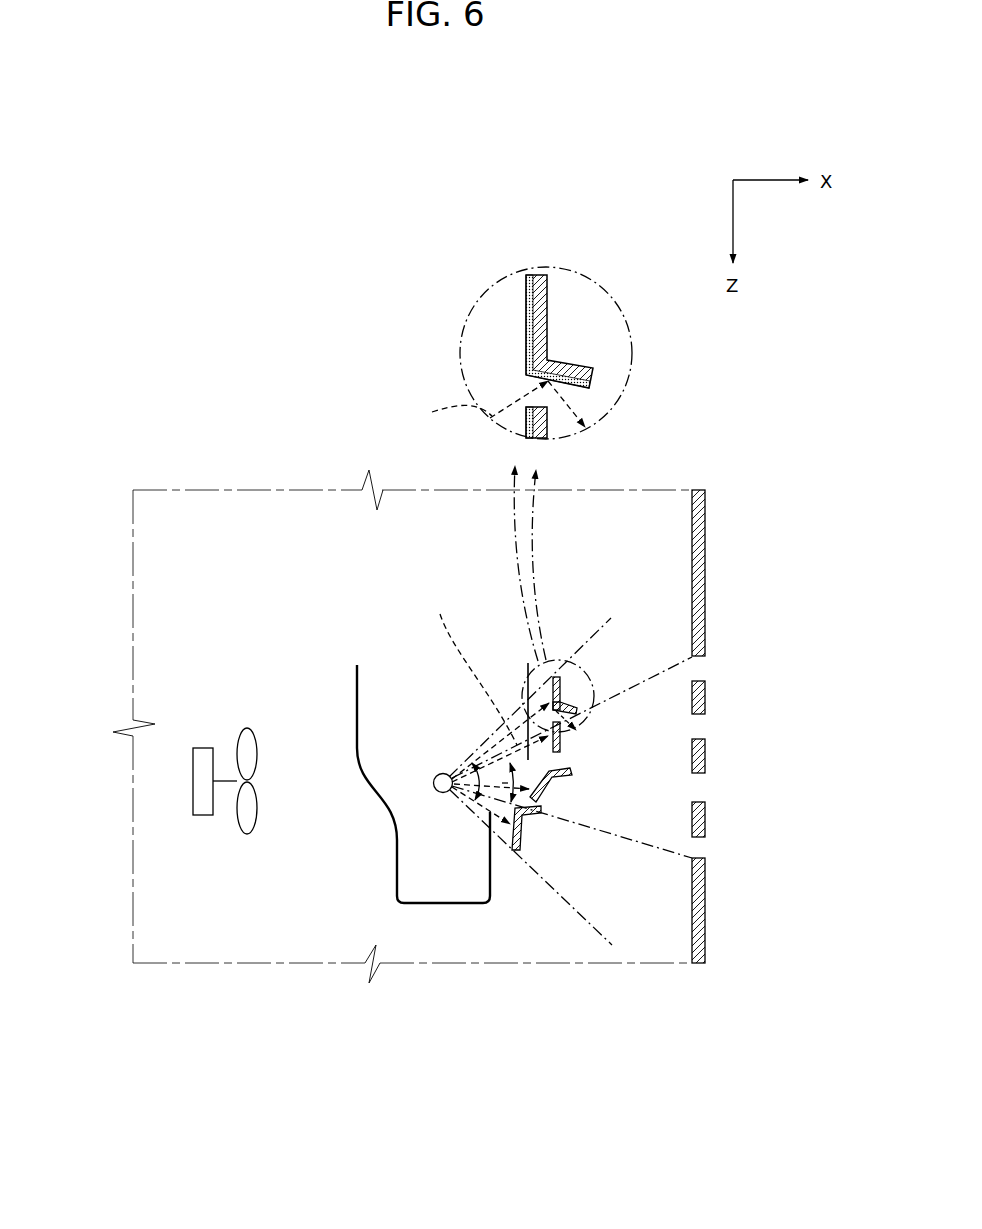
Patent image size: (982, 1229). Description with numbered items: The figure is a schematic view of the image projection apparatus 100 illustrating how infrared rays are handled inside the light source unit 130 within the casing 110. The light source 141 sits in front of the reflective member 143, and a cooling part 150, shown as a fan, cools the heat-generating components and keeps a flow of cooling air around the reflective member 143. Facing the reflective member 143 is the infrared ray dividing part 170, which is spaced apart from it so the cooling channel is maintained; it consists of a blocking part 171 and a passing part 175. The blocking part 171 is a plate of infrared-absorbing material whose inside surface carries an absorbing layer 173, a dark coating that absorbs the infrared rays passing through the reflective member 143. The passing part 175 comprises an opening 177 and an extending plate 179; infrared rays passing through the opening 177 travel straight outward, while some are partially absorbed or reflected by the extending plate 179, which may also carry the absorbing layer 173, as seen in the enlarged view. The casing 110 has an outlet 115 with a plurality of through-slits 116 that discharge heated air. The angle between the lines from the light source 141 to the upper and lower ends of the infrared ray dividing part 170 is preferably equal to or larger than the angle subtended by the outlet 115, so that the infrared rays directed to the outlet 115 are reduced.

The display apparatus 100 is at (366, 647).
The casing 110 is at (703, 605).
The outlet 115 is at (715, 671).
The through-slits 116 is at (701, 726).
The light source unit 130 is at (122, 856).
The light source 141 is at (441, 793).
The reflective member 143 is at (397, 862).
The cooling part 150 is at (205, 803).
The infrared ray dividing part 170 is at (557, 694).
The blocking part 171 is at (547, 312).
The absorbing layer 173 is at (526, 415).
The passing part 175 is at (622, 719).
The opening 177 is at (547, 415).
The extending plate 179 is at (593, 371).